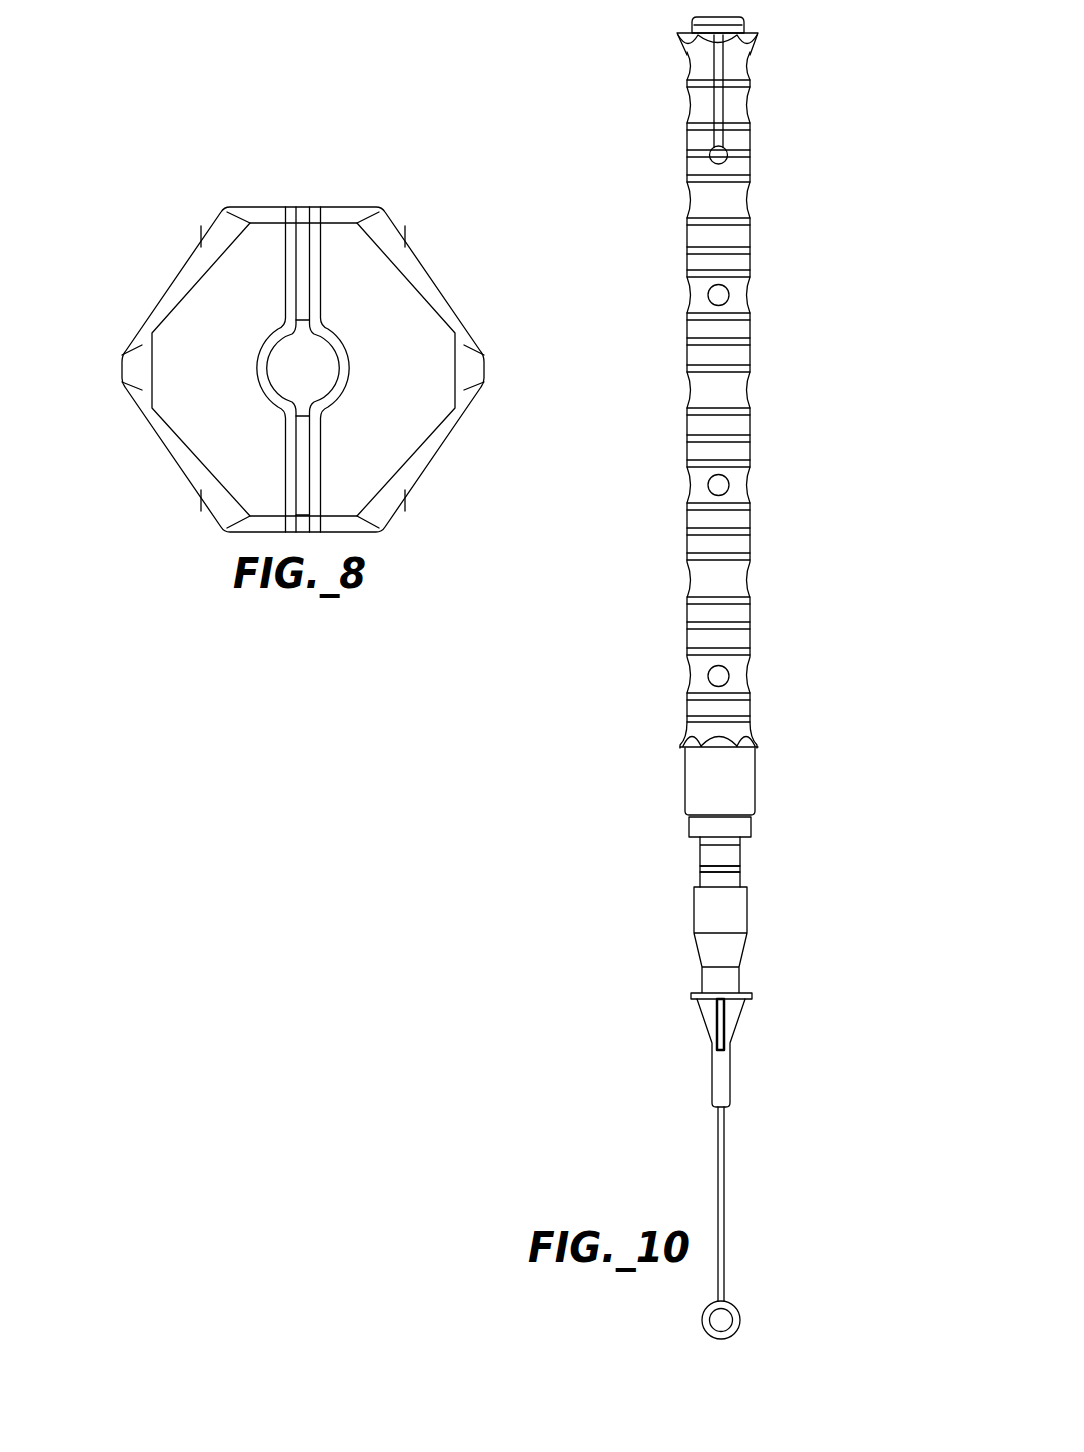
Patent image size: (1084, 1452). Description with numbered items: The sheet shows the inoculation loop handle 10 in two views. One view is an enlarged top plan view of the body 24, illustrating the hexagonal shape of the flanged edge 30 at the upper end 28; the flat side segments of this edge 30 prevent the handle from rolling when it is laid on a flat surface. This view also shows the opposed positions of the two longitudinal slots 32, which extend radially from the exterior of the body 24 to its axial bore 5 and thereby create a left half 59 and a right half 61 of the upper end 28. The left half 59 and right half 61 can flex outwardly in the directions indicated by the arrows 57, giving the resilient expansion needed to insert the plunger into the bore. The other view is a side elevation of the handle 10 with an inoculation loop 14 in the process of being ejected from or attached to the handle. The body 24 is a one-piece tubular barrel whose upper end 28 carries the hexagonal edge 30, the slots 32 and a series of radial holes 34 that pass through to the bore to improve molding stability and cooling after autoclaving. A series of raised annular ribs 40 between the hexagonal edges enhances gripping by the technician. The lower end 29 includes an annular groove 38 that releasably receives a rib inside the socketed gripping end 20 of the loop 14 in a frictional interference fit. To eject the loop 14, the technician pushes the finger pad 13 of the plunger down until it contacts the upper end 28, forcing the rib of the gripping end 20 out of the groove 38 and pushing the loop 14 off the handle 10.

In FIG. 8, the central opening 5 is at (326, 361).
In FIG. 10, the inoculation loop handle 10 is at (833, 90).
In FIG. 10, the finger pad 13 is at (692, 27).
In FIG. 10, the inoculation loop 14 is at (731, 1077).
In FIG. 10, the gripping end 20 is at (748, 923).
In FIG. 8, the body 24 is at (121, 371).
In FIG. 10, the body 24 is at (735, 583).
In FIG. 8, the upper end 28 is at (492, 363).
In FIG. 10, the upper end 28 is at (757, 26).
In FIG. 10, the lower end 29 is at (740, 877).
In FIG. 8, the hexagonal flanged edge 30 is at (458, 410).
In FIG. 10, the hexagonal flanged edge 30 is at (683, 50).
In FIG. 8, the longitudinal slots 32 is at (303, 228).
In FIG. 10, the longitudinal slots 32 is at (712, 97).
In FIG. 10, the radial holes 34 is at (710, 488).
In FIG. 10, the annular groove 38 is at (700, 867).
In FIG. 10, the raised annular ribs 40 is at (751, 367).
In FIG. 8, the arrows 57 is at (499, 376).
In FIG. 8, the left half 59 is at (216, 467).
In FIG. 8, the right half 61 is at (409, 436).